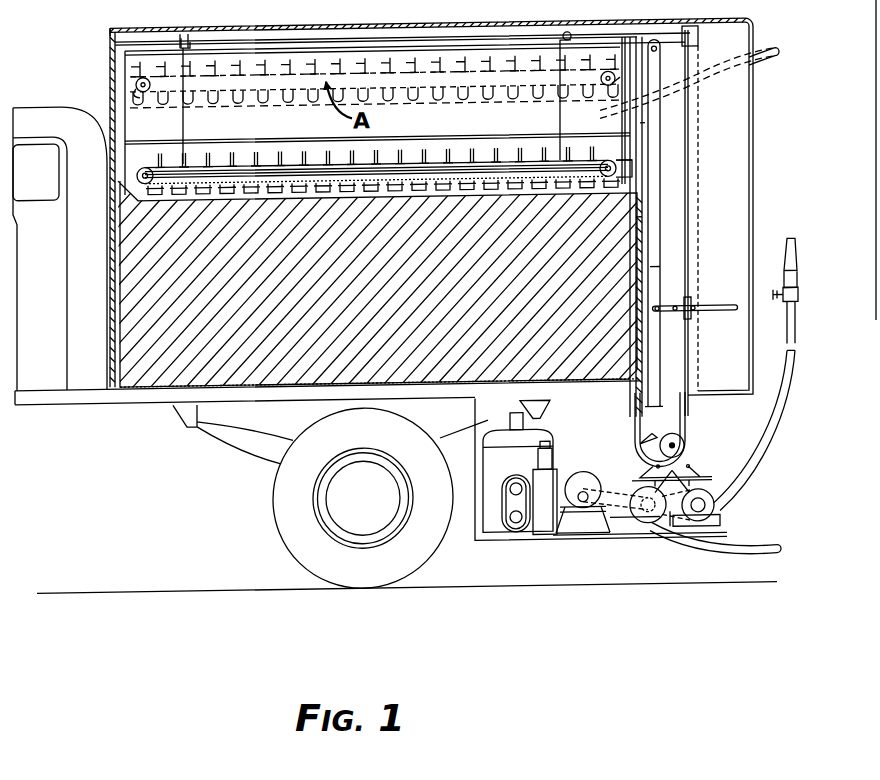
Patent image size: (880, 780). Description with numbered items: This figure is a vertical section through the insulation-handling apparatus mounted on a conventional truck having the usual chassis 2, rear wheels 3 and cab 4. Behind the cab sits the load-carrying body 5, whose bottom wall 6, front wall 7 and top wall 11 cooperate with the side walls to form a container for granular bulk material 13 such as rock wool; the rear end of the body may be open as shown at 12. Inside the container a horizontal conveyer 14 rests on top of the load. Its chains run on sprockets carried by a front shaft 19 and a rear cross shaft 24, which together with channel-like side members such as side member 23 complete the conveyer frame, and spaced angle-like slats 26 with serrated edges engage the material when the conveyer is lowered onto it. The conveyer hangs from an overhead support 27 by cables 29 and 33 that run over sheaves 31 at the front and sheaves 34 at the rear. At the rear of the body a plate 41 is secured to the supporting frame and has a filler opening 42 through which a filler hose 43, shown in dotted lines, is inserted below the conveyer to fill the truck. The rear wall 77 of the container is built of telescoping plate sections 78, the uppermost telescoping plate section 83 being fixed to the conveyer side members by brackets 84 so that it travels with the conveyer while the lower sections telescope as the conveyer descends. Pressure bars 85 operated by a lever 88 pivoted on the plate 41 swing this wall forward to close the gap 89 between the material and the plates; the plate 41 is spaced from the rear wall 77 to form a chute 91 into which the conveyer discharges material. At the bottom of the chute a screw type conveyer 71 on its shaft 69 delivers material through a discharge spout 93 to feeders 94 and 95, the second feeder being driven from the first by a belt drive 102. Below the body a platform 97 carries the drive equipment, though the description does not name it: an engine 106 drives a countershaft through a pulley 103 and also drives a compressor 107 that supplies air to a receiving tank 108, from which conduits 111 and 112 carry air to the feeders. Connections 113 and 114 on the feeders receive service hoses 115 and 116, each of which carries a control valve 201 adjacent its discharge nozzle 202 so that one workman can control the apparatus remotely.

The chassis 2 is at (66, 399).
The rear wheels 3 is at (290, 521).
The cab 4 is at (33, 101).
The load-carrying body 5 is at (108, 25).
The bottom wall 6 is at (141, 385).
The front wall 7 is at (110, 88).
The top wall 11 is at (409, 23).
The open rear end 12 is at (754, 110).
The granular bulk material 13 is at (276, 351).
The conveyer 14 is at (479, 94).
The shaft 19 is at (146, 165).
The side member 23 is at (311, 173).
The cross shaft 24 is at (609, 165).
The angle-like slats 26 is at (288, 97).
The overhead support 27 is at (304, 44).
The cable 29 is at (184, 117).
The sheaves 31 is at (183, 34).
The cable 33 is at (560, 125).
The sheaves 34 is at (564, 37).
The plate 41 is at (690, 198).
The filler opening 42 is at (690, 113).
The filler hose 43 is at (765, 57).
The shaft 69 is at (682, 447).
The screw type conveyer 71 is at (675, 447).
The rear wall 77 is at (648, 232).
The telescoping plate sections 78 is at (658, 279).
The uppermost telescoping plate section 83 is at (642, 126).
The brackets 84 is at (642, 170).
The pressure bars 85 is at (660, 263).
The lever 88 is at (740, 312).
The gap 89 is at (633, 400).
The chute 91 is at (676, 351).
The discharge spout 93 is at (690, 480).
The feeder 94 is at (641, 494).
The feeder 95 is at (702, 497).
The platform 97 is at (476, 541).
The belt drive 102 is at (671, 514).
The pulley 103 is at (592, 474).
The engine 106 is at (500, 443).
The compressor 107 is at (515, 497).
The receiving tank 108 is at (552, 482).
The conduit 111 is at (590, 526).
The conduit 112 is at (621, 518).
The connection 113 is at (647, 525).
The connection 114 is at (706, 527).
The service hose 115 is at (755, 556).
The service hose 116 is at (766, 460).
The control valve 201 is at (791, 310).
The discharge nozzle 202 is at (784, 246).